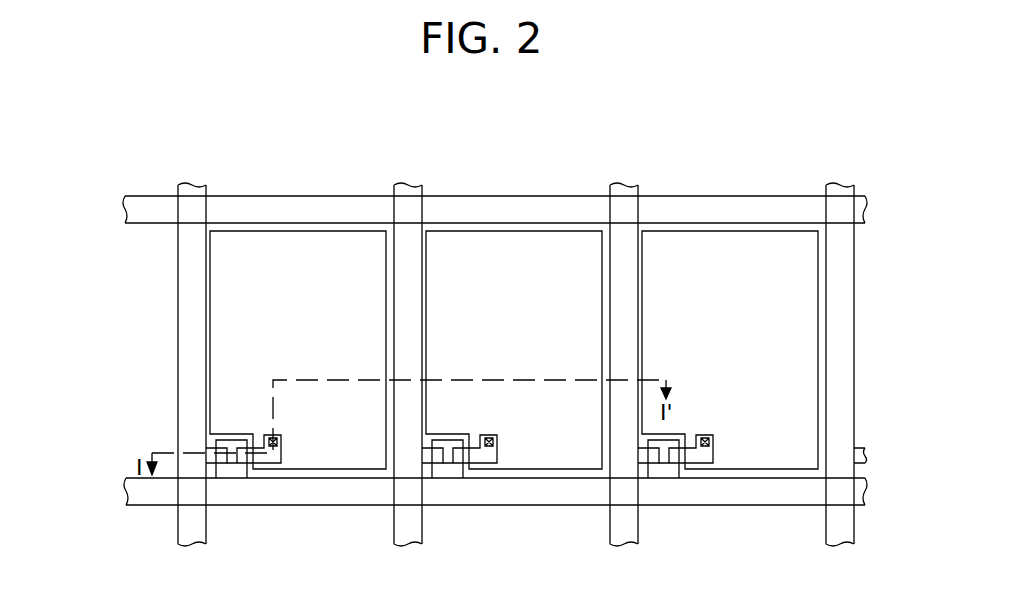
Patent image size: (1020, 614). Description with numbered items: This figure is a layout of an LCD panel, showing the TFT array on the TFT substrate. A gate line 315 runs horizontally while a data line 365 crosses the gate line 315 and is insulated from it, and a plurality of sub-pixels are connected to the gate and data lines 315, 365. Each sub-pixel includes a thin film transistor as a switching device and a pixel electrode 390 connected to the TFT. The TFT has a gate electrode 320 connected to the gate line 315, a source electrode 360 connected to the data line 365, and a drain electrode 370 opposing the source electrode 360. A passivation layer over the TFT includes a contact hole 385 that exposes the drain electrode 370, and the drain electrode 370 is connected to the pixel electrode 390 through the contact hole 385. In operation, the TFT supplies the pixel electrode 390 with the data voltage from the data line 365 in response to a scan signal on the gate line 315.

The gate line 315 is at (125, 490).
The gate electrode 320 is at (450, 470).
The source electrode 360 is at (427, 453).
The data line 365 is at (190, 545).
The drain electrode 370 is at (487, 457).
The contact hole 385 is at (488, 437).
The pixel electrode 390 is at (217, 403).